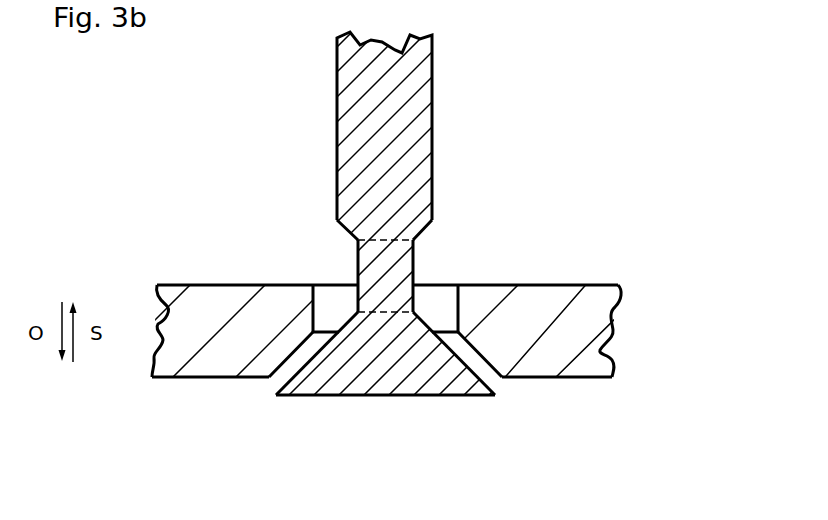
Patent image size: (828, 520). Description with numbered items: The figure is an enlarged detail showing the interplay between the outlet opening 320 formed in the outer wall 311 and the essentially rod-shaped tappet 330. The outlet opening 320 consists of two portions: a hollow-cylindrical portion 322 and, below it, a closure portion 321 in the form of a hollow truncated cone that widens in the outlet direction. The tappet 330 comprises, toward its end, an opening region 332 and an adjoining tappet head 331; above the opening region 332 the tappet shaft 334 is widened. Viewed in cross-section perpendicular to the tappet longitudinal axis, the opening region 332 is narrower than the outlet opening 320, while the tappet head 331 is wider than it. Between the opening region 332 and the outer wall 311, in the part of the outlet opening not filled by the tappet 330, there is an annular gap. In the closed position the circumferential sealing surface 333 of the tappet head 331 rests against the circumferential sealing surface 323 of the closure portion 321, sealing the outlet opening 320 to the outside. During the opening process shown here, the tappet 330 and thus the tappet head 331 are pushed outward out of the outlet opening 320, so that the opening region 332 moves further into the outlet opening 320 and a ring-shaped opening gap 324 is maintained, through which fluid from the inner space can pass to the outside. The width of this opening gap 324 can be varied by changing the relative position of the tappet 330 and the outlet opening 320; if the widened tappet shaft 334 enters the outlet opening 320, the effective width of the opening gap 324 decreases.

The tappet 330 is at (467, 180).
The tappet shaft 334 is at (433, 118).
The opening region 332 is at (369, 270).
The tappet head 331 is at (405, 385).
The circumferential sealing surface of the tappet head 333 is at (310, 350).
The opening gap 324 is at (482, 377).
The outlet opening 320 is at (298, 250).
The outer wall 311 is at (597, 292).
The circumferential sealing surface of the closure portion 323 is at (288, 352).
The hollow-cylindrical portion 322 is at (443, 296).
The closure portion 321 is at (278, 380).